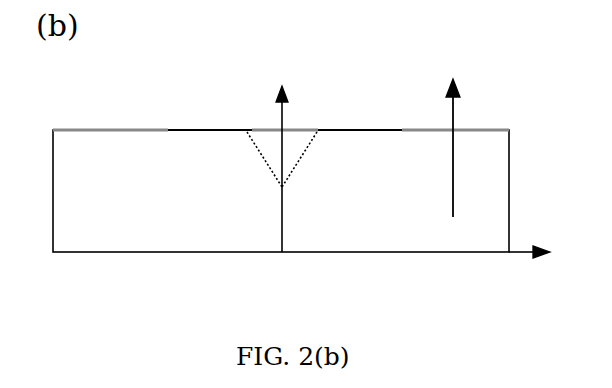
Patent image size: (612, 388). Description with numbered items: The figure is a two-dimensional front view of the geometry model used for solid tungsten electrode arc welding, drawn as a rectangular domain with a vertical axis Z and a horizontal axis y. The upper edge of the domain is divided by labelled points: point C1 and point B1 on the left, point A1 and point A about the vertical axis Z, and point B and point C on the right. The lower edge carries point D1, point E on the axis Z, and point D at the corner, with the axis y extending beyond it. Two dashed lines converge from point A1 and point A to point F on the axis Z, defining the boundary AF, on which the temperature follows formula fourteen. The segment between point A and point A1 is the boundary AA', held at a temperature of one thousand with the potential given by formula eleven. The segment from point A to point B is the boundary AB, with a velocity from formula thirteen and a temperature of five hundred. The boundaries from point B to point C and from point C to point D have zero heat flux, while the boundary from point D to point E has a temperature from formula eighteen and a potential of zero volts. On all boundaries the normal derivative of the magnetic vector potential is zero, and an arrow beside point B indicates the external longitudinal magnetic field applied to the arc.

The z axis Z is at (290, 159).
The y axis y is at (529, 267).
The point B is at (433, 148).
The point F is at (282, 166).
The point A is at (320, 121).
The point A' A1 is at (247, 121).
The point B' B1 is at (174, 121).
The point C is at (506, 121).
The point C' C1 is at (62, 121).
The point D is at (504, 266).
The point D' D1 is at (61, 266).
The point E is at (288, 266).